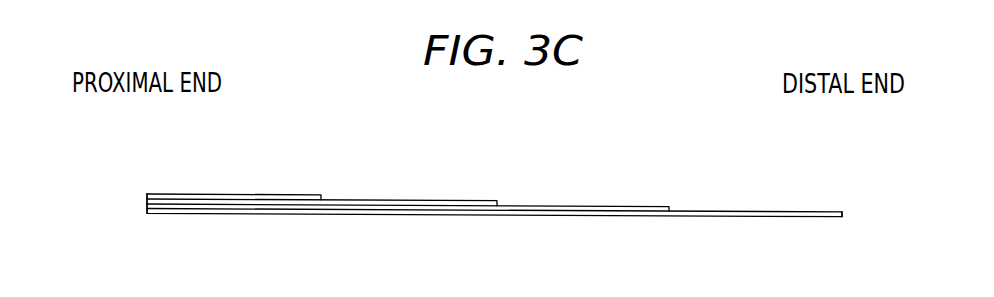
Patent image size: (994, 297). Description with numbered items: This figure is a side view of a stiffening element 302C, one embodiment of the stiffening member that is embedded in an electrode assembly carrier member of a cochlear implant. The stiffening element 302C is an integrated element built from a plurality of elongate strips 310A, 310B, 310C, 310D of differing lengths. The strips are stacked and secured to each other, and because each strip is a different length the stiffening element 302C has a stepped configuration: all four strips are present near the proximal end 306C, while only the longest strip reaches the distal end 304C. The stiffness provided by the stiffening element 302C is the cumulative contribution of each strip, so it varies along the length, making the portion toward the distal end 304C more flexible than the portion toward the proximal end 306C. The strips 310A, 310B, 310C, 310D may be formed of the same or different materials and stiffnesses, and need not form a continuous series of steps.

The stiffening element 302C is at (148, 215).
The distal end 304C is at (843, 210).
The proximal end 306C is at (148, 192).
The elongate strip 310A is at (297, 194).
The elongate strip 310B is at (477, 200).
The elongate strip 310C is at (595, 207).
The elongate strip 310D is at (697, 212).